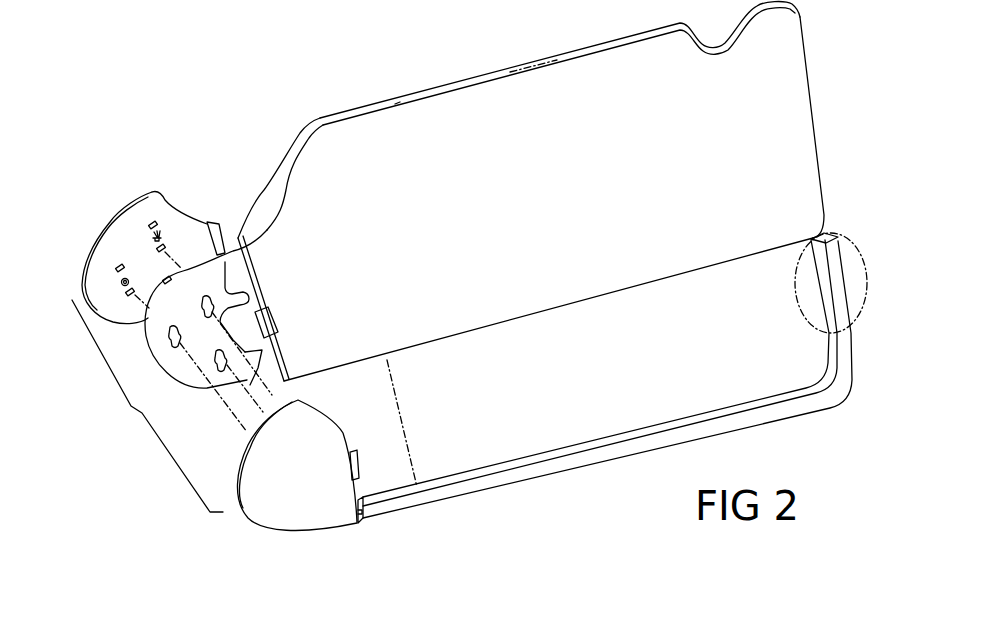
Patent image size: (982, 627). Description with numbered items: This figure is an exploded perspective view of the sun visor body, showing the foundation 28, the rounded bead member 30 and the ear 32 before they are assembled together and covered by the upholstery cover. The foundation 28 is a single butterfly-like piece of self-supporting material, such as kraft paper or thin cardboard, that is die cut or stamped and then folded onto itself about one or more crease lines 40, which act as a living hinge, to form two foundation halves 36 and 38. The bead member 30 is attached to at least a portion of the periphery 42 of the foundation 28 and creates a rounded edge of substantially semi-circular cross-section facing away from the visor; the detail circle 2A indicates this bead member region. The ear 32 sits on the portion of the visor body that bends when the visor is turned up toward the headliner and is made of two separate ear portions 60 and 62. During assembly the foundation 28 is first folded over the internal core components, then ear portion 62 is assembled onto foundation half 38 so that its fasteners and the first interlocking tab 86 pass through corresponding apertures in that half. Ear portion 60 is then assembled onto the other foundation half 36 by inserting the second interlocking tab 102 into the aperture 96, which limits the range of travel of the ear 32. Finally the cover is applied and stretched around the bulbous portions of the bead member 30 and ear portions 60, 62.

The foundation 28 is at (540, 244).
The bead member 30 is at (504, 507).
The ear 32 is at (147, 406).
The foundation half 36 is at (537, 300).
The foundation half 38 is at (273, 190).
The crease lines 40 is at (565, 57).
The periphery 42 is at (818, 132).
The ear portion 60 is at (283, 517).
The ear portion 62 is at (160, 208).
The first interlocking tab 86 is at (207, 220).
The aperture 96 is at (262, 306).
The second interlocking tab 102 is at (356, 452).
The detail view 2A is at (795, 325).